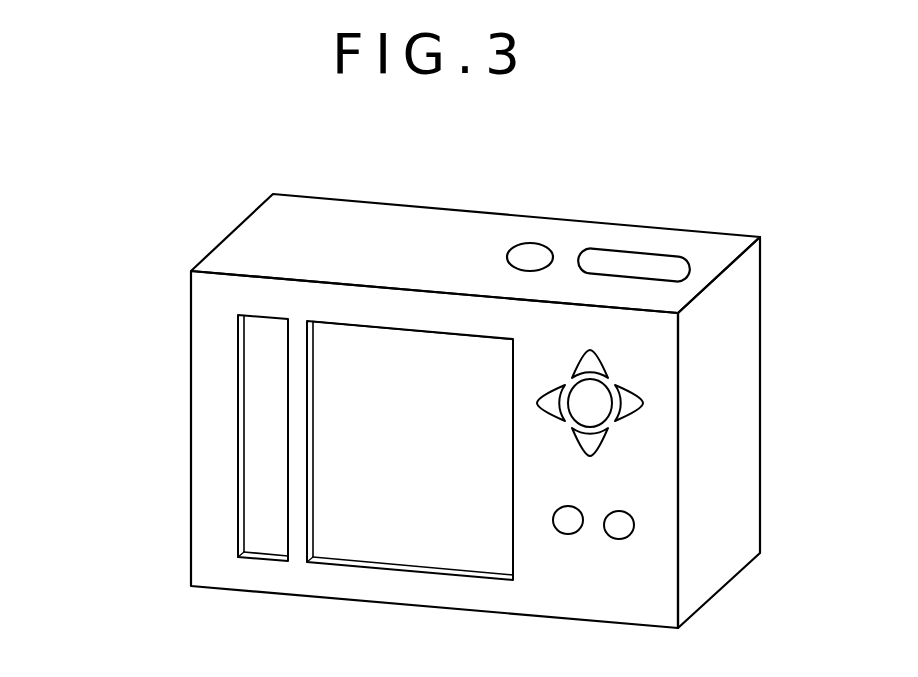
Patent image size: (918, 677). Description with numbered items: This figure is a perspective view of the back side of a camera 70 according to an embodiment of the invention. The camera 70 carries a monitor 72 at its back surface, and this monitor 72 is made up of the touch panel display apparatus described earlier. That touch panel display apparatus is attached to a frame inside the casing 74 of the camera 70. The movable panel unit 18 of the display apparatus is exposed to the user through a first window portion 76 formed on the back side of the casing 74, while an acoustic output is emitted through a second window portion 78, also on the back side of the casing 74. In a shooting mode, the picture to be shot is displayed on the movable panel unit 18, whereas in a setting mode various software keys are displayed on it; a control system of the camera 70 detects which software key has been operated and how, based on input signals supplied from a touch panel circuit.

The camera 70 is at (422, 390).
The monitor 72 is at (172, 570).
The casing 74 is at (400, 236).
The first window portion 76 is at (314, 408).
The second window portion 78 is at (238, 452).
The movable panel unit 18 is at (428, 535).